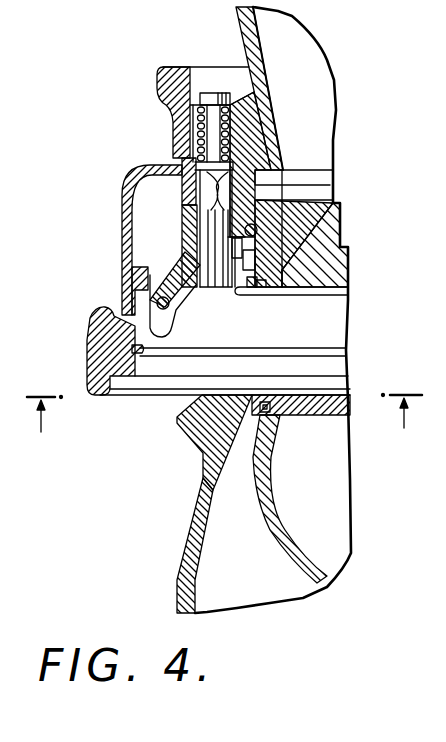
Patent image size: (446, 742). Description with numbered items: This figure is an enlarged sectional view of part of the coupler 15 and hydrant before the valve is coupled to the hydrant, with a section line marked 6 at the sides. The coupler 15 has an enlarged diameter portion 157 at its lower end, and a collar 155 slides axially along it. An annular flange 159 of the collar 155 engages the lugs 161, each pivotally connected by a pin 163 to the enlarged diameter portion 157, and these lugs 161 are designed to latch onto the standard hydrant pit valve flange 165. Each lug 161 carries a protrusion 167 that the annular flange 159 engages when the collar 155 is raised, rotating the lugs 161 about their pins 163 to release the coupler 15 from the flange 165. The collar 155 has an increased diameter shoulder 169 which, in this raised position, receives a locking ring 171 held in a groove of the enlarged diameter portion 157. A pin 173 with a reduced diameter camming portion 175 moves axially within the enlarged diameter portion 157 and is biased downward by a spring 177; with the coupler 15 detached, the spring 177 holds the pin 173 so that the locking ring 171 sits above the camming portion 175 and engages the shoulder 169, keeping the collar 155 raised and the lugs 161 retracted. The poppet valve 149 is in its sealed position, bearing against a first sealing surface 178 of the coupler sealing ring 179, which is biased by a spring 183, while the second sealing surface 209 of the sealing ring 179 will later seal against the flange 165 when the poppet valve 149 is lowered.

The coupler 15 is at (124, 98).
The enlarged diameter portion 157 is at (266, 121).
The spring 177 is at (197, 121).
The locking ring 171 is at (181, 157).
The increased diameter shoulder 169 is at (188, 183).
The reduced diameter camming portion 175 is at (212, 195).
The protrusion 167 is at (162, 270).
The collar 155 is at (125, 264).
The annular flange 159 is at (140, 280).
The lug 161 is at (143, 312).
The pin 163 is at (170, 305).
The pin 173 is at (239, 297).
The second sealing surface 209 is at (262, 288).
The coupler sealing ring 179 is at (272, 218).
The first sealing surface 178 is at (278, 270).
The spring 183 is at (330, 185).
The poppet valve 149 is at (335, 236).
The hydrant pit valve flange 165 is at (200, 427).
The section line 6- 6 is at (222, 430).